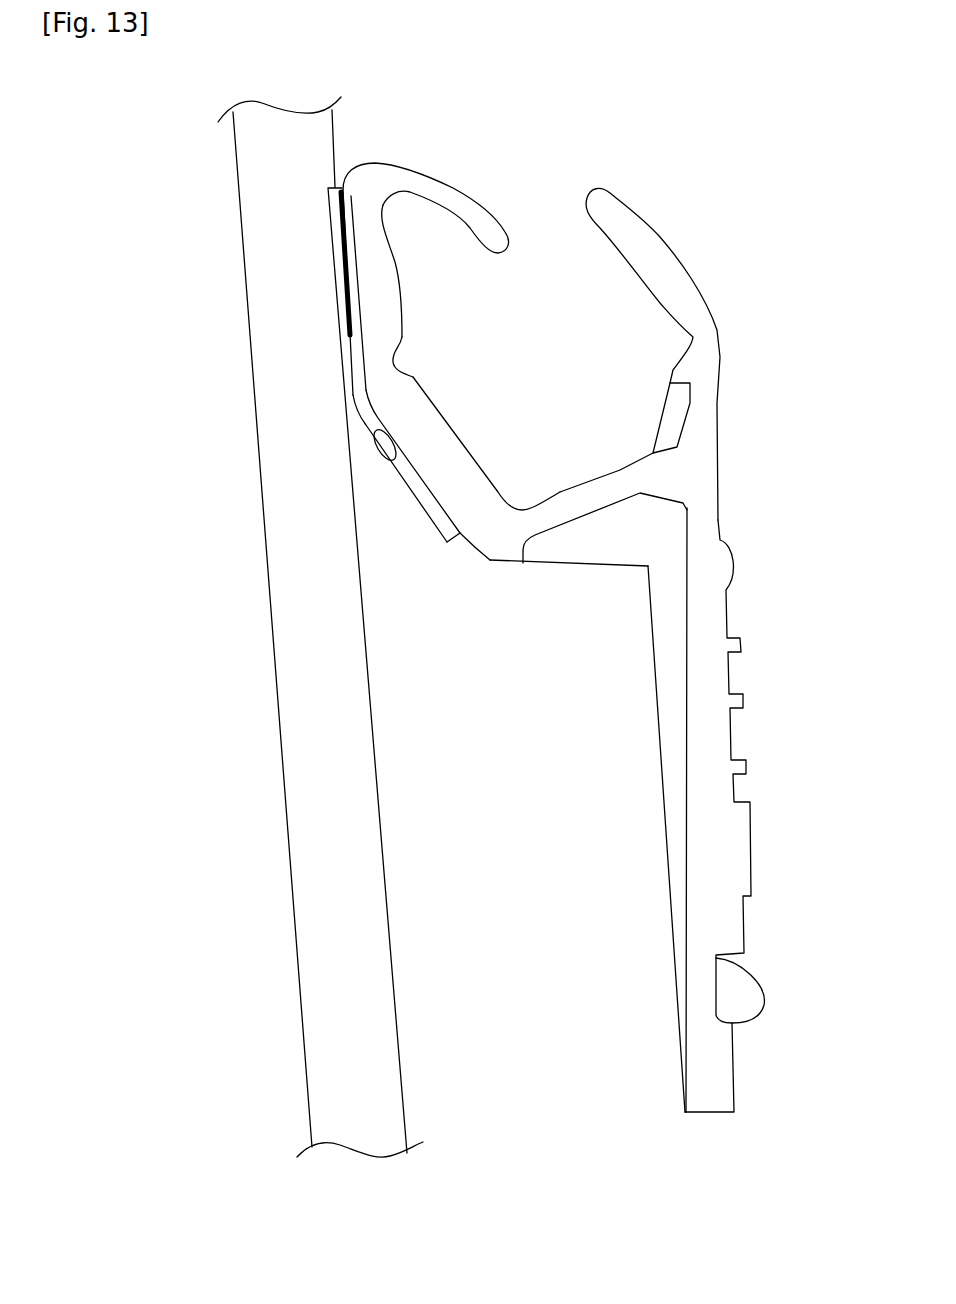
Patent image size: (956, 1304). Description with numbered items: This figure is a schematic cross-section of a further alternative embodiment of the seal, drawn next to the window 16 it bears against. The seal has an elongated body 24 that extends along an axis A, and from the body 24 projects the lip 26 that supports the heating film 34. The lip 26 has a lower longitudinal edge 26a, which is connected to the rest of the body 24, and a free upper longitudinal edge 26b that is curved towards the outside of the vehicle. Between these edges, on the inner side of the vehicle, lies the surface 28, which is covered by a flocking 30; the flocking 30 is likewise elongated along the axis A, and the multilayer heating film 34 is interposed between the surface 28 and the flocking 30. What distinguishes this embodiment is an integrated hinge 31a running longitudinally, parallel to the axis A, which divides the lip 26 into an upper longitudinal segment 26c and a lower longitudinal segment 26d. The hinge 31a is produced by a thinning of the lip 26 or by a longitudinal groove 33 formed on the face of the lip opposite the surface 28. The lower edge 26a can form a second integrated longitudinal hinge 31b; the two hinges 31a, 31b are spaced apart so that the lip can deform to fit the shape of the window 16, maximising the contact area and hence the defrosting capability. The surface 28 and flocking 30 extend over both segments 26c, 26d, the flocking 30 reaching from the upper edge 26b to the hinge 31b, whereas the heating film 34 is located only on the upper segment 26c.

The window 16 is at (293, 895).
The body 24 is at (642, 578).
The lip 26 is at (480, 430).
The lower longitudinal edge 26a is at (492, 507).
The upper longitudinal edge 26b is at (455, 202).
The upper longitudinal segment 26c is at (300, 182).
The lower longitudinal segment 26d is at (428, 566).
The surface 28 is at (388, 452).
The flocking 30 is at (427, 535).
The integrated hinge 31a is at (402, 338).
The second integrated longitudinal hinge 31b is at (497, 522).
The longitudinal groove 33 is at (402, 360).
The multilayer heating film 34 is at (372, 250).
The axis A is at (700, 470).